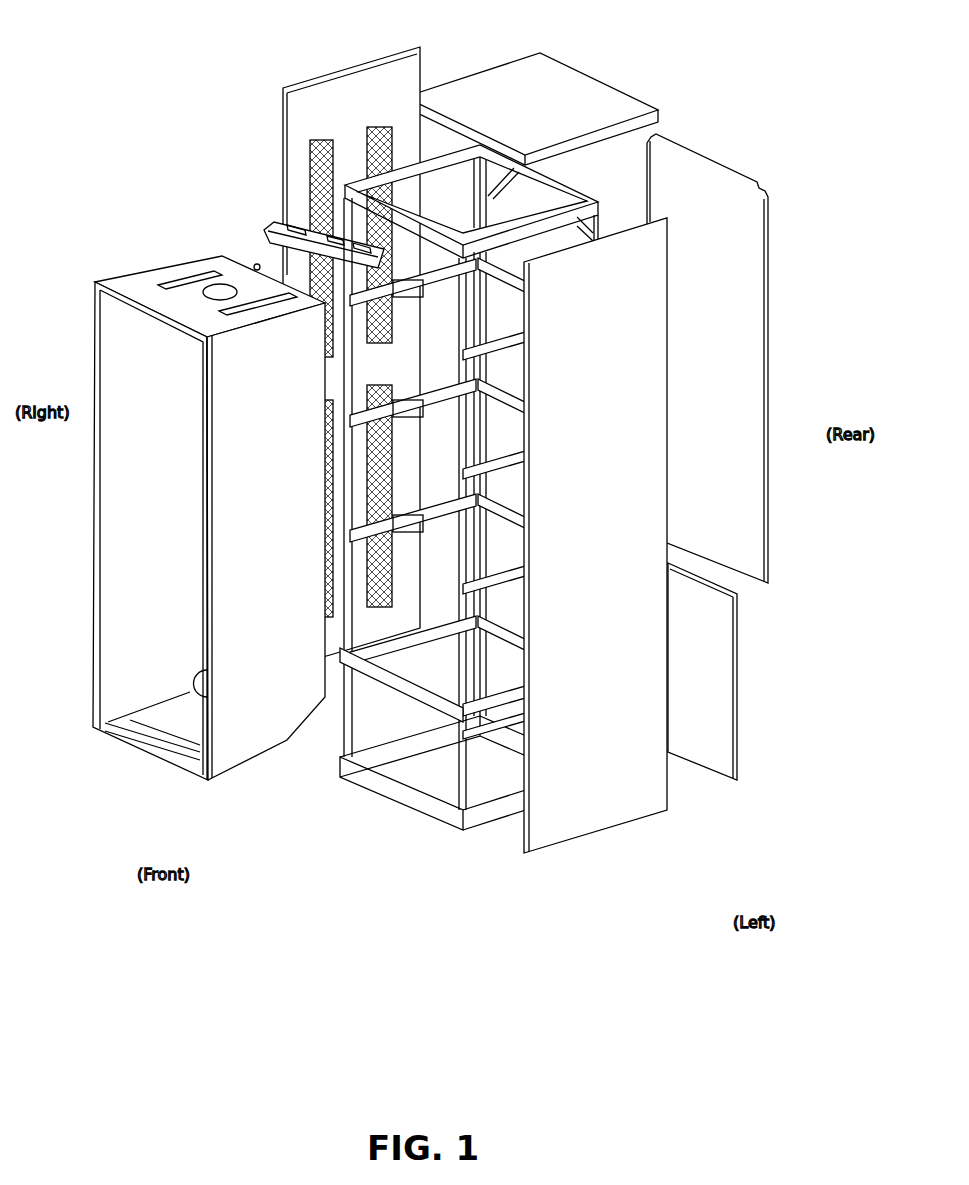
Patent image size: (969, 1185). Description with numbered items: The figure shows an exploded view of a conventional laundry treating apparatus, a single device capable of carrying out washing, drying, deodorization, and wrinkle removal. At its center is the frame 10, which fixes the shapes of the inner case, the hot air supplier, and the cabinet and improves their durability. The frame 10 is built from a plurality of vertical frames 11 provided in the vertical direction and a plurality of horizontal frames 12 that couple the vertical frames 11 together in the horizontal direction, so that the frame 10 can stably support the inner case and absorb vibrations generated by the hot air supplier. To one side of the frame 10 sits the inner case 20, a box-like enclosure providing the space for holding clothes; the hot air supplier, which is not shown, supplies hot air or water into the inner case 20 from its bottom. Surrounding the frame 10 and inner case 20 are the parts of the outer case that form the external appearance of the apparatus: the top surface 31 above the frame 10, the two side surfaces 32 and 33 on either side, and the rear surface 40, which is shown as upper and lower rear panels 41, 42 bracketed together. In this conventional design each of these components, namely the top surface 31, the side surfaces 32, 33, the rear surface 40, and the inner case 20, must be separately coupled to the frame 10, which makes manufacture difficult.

The frame 10 is at (122, 36).
The vertical frame 11 is at (462, 787).
The horizontal frame 12 is at (490, 707).
The inner case 20 is at (93, 487).
The top surface 31 is at (488, 88).
The side surface 32 is at (625, 425).
The side surface 33 is at (302, 97).
The rear surface 40 is at (766, 457).
The upper rear panel 41 is at (752, 512).
The lower rear panel 42 is at (751, 671).